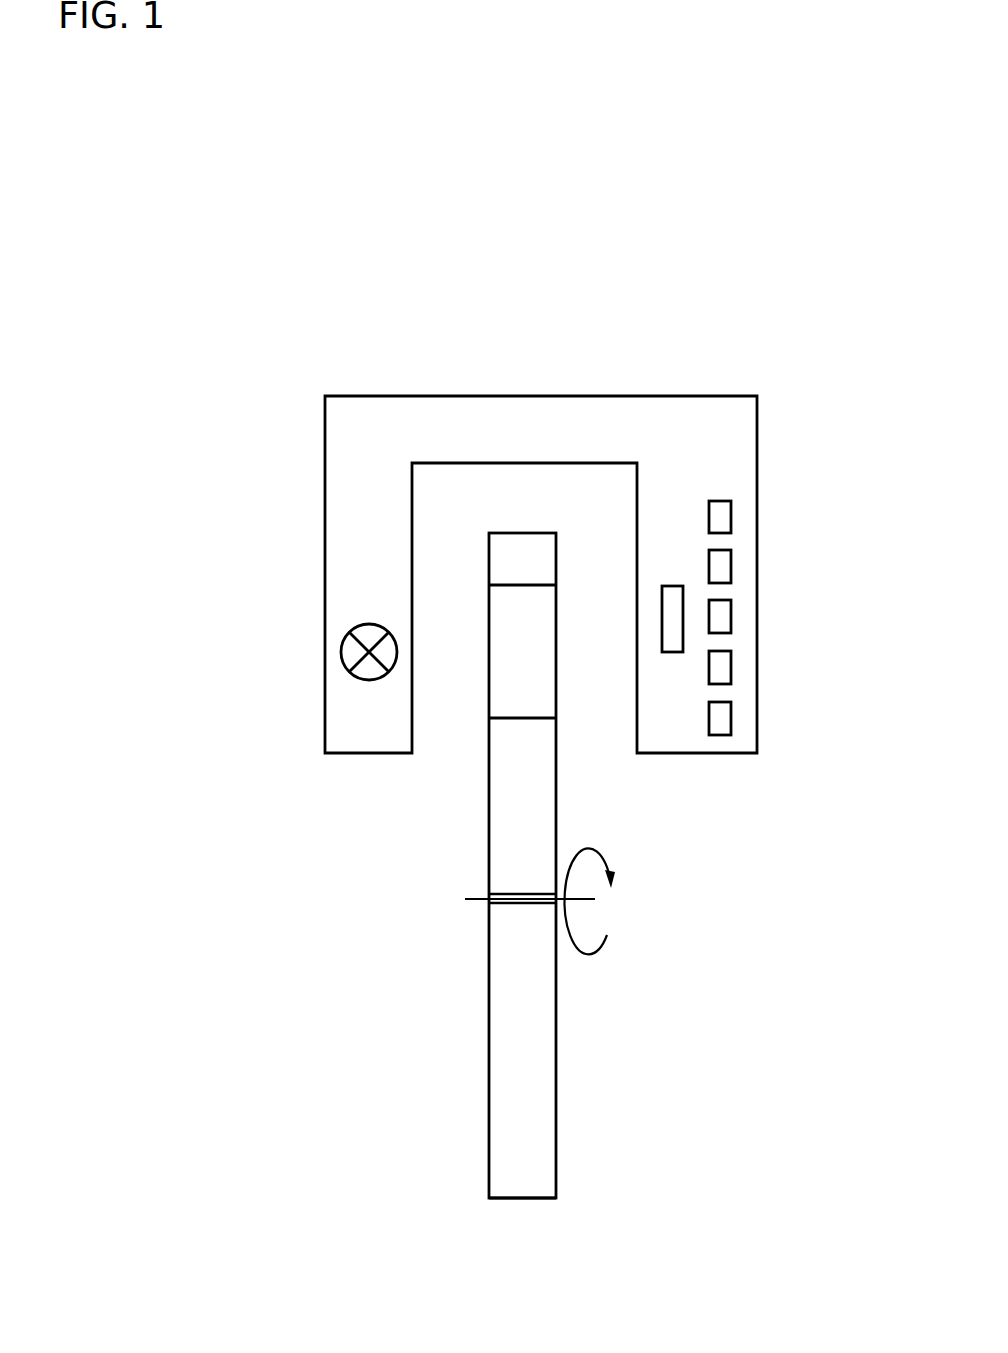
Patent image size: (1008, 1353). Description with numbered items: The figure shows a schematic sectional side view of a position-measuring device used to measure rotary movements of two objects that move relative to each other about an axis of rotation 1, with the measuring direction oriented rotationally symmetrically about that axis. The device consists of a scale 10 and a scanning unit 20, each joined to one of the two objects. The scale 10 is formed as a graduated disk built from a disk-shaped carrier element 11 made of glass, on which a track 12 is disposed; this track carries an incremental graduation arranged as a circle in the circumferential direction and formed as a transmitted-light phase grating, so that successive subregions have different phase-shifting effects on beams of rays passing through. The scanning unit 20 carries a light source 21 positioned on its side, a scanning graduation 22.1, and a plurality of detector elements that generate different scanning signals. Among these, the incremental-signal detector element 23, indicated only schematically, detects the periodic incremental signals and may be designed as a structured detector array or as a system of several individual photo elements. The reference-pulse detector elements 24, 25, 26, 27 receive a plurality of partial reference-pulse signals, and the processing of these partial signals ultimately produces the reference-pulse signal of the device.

The axis of rotation 1 is at (465, 899).
The scale 10 is at (455, 1115).
The carrier element 11 is at (517, 1164).
The track 12 is at (504, 695).
The scanning unit 20 is at (300, 540).
The light source 21 is at (341, 654).
The scanning graduation 22.1 is at (668, 604).
The incremental-signal detector element 23 is at (720, 625).
The reference-pulse detector element 24 is at (720, 524).
The reference-pulse detector element 25 is at (720, 574).
The reference-pulse detector element 26 is at (720, 675).
The reference-pulse detector element 27 is at (720, 725).